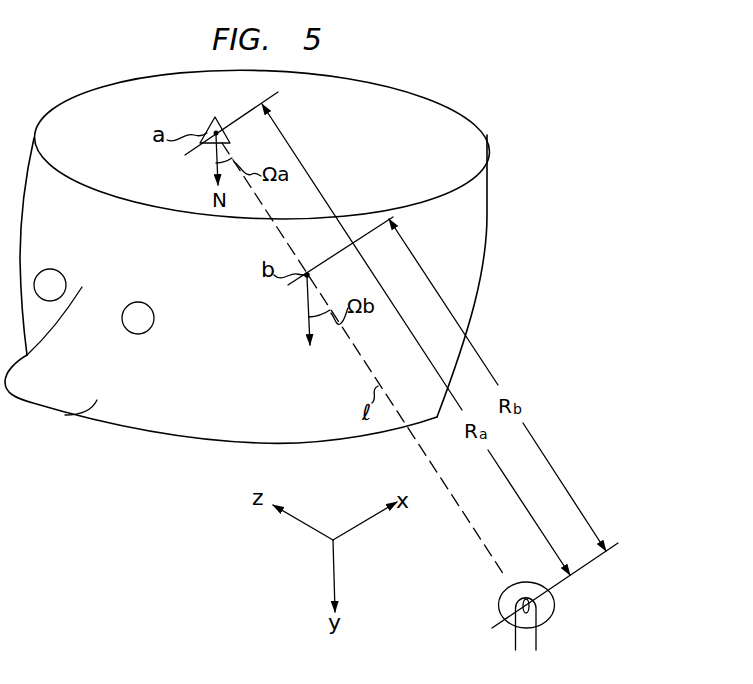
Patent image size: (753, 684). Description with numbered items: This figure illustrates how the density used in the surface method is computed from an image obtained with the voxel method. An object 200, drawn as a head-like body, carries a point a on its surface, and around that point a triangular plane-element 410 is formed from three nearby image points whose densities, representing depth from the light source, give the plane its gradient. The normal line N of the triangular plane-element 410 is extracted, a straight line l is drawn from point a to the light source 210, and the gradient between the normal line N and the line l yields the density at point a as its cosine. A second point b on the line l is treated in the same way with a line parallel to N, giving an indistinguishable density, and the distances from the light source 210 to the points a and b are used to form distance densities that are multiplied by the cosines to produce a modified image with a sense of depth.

The object (head) being imaged 200 is at (484, 130).
The triangular plane-element 410 is at (216, 116).
The light source 210 is at (515, 637).